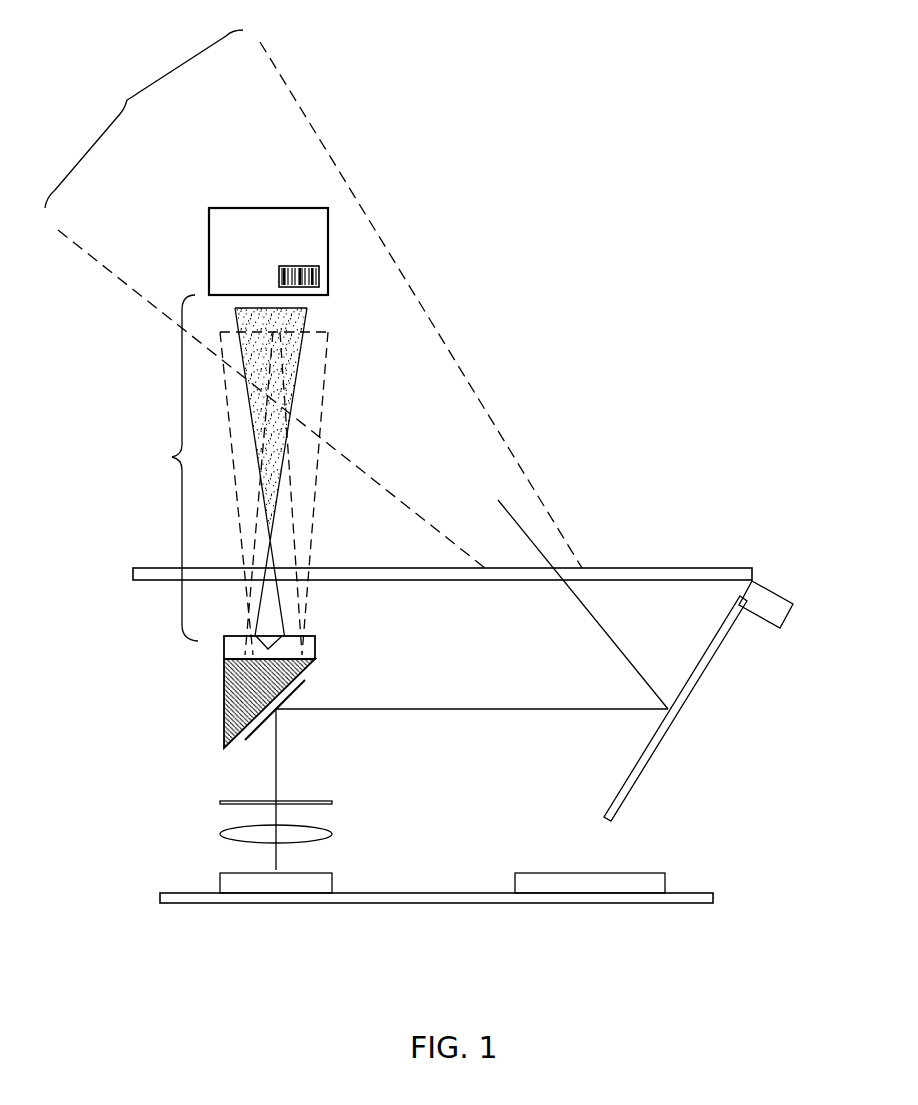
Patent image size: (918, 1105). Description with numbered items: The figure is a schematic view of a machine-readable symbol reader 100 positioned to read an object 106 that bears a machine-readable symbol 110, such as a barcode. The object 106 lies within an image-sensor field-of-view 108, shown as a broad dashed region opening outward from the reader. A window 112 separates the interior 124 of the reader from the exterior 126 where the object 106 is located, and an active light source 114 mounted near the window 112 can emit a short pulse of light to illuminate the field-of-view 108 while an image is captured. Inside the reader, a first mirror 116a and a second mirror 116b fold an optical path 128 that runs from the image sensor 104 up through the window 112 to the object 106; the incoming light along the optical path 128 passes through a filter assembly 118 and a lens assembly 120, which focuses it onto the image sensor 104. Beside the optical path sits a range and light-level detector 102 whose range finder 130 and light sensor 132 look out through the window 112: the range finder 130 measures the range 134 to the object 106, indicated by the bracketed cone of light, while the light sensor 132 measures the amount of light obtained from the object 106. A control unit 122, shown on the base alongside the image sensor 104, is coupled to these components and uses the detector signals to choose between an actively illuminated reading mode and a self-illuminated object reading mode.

The machine-readable symbol reader 100 is at (662, 35).
The range and light-level detector 102 is at (224, 648).
The image sensor 104 is at (230, 872).
The object 106 is at (266, 222).
The image-sensor field-of-view 108 is at (313, 299).
The machine-readable symbol 110 is at (319, 279).
The window 112 is at (667, 572).
The active light source 114 is at (763, 593).
The first mirror 116a is at (657, 738).
The second mirror 116b is at (255, 738).
The filter assembly 118 is at (327, 797).
The lens assembly 120 is at (222, 832).
The control unit 122 is at (532, 873).
The interior 124 is at (742, 825).
The exterior 126 is at (650, 95).
The optical path 128 is at (473, 710).
The range finder 130 is at (297, 658).
The light sensor 132 is at (267, 642).
The range 134 is at (229, 475).